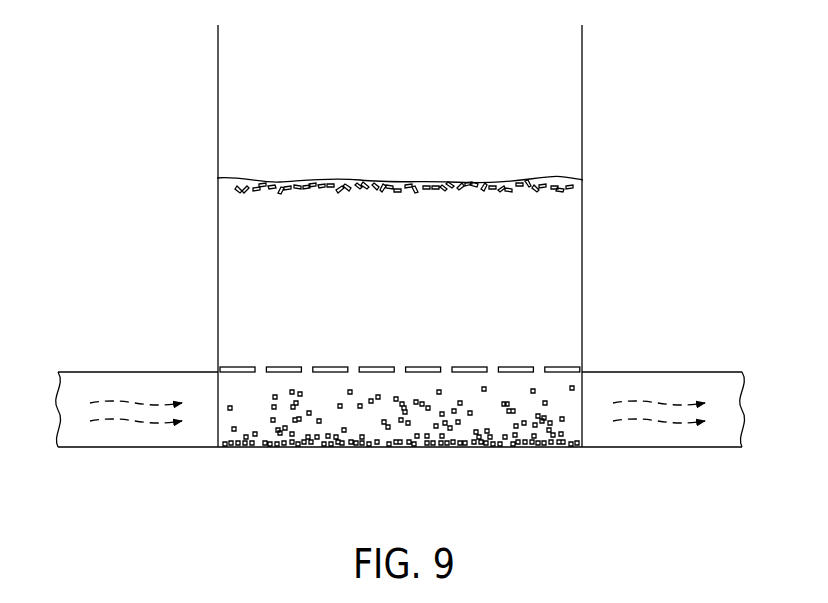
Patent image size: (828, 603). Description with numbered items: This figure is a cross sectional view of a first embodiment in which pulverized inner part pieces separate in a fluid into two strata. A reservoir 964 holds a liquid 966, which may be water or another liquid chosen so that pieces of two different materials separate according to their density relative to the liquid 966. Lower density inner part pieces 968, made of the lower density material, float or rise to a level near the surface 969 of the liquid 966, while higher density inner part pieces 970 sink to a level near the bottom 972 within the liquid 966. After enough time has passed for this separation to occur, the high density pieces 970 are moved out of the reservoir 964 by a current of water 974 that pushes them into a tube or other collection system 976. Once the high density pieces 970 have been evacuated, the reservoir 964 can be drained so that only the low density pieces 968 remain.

The reservoir 964 is at (582, 283).
The liquid 966 is at (236, 292).
The lower density inner part pieces 968 is at (372, 190).
The surface 969 is at (515, 180).
The higher density inner part pieces 970 is at (310, 412).
The bottom 972 is at (535, 447).
The current of water 974 is at (138, 426).
The tube or other collection system 976 is at (663, 426).